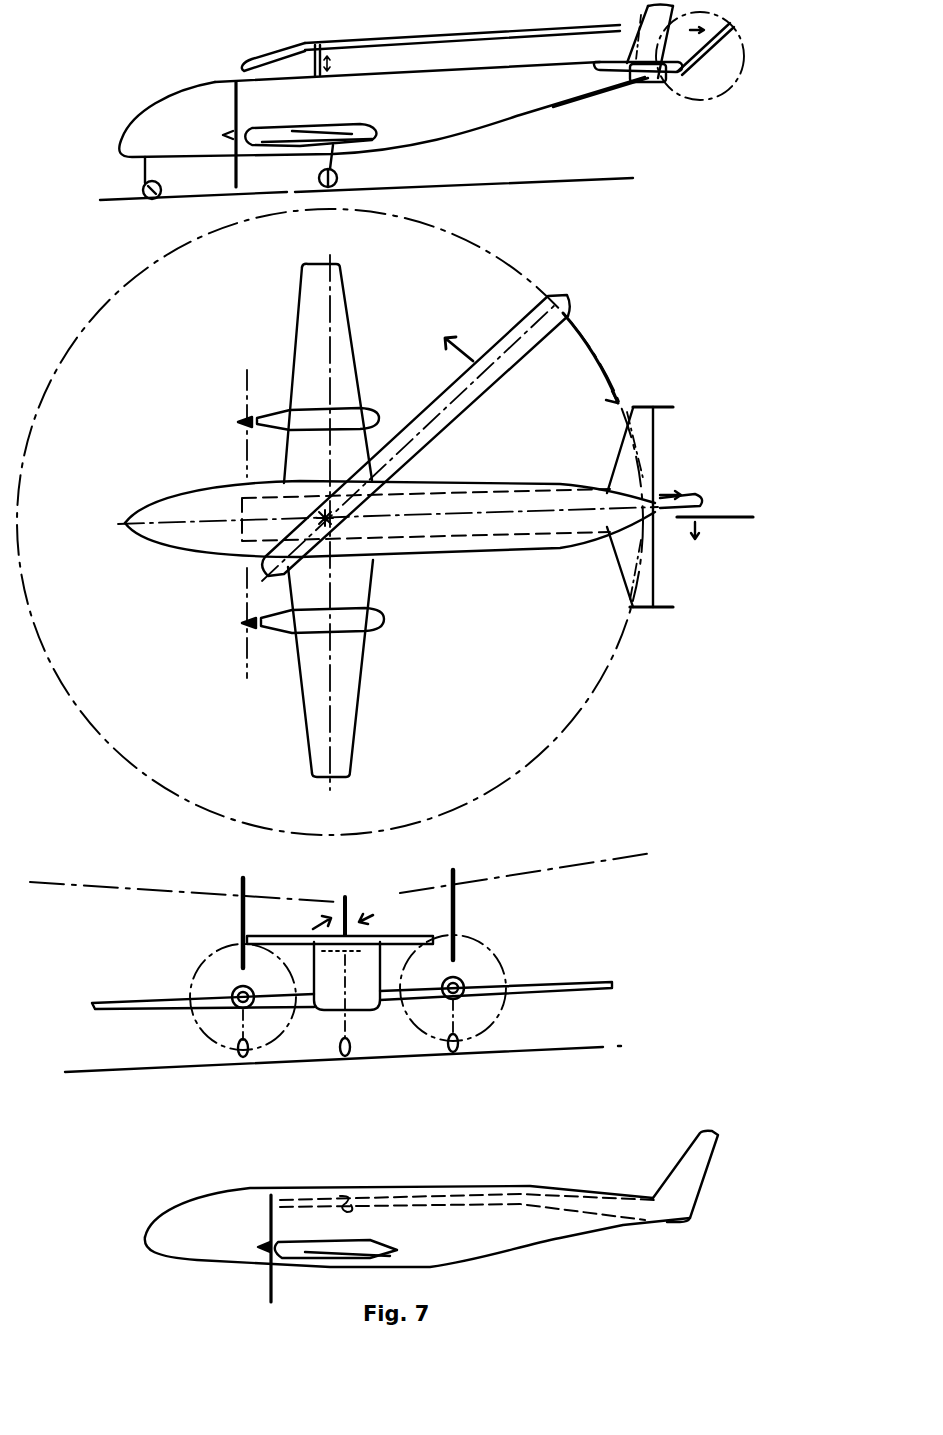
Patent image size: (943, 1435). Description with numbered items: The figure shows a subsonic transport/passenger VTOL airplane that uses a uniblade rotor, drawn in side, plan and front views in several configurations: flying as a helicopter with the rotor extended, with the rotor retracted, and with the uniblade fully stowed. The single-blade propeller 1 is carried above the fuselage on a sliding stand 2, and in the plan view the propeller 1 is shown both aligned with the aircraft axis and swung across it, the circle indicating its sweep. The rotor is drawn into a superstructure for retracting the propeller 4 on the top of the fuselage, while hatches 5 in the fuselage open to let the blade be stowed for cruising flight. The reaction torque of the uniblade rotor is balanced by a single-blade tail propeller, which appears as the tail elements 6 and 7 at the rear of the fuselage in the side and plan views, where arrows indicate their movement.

The single-blade propeller 1 is at (458, 393).
The sliding stand 2 is at (303, 52).
The superstructure for retracting the propeller 4 is at (358, 930).
The hatches 5 is at (378, 932).
The horizontal stabilizer 6 is at (702, 44).
The tail control surface 7 is at (688, 500).